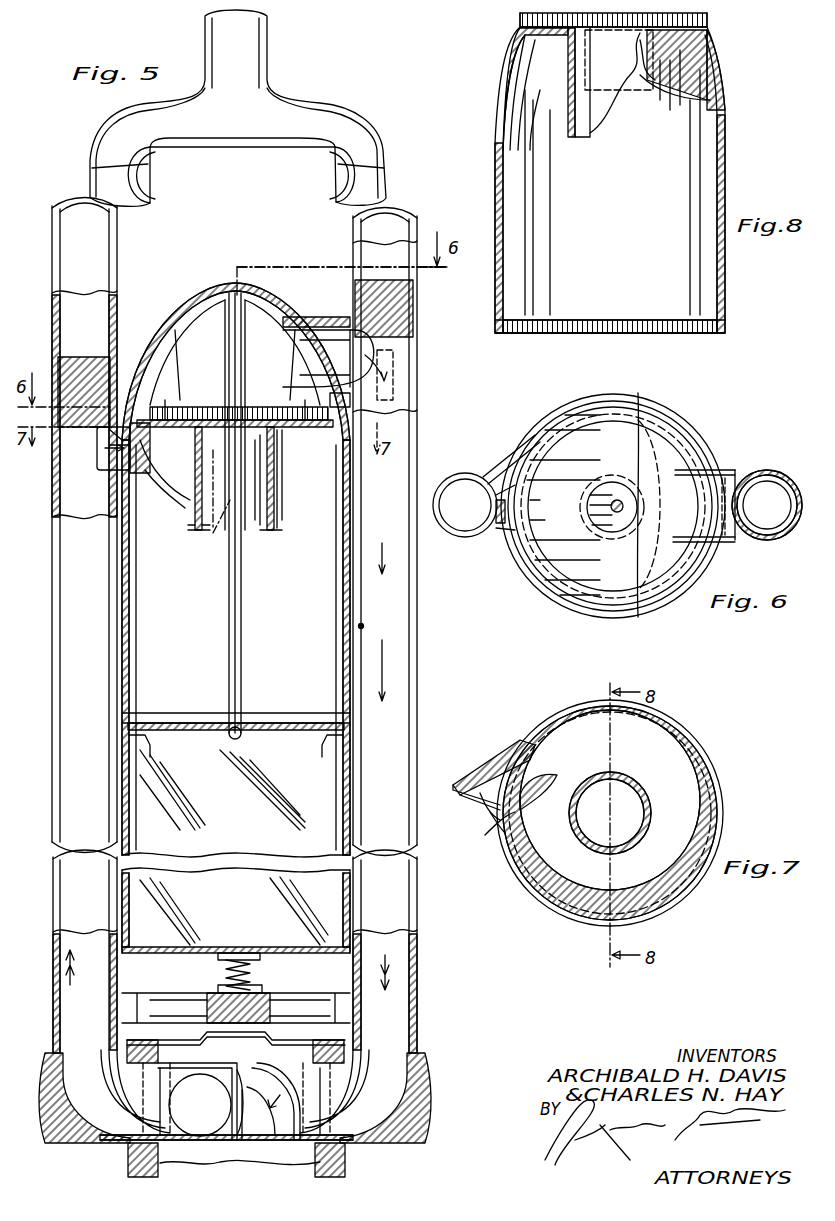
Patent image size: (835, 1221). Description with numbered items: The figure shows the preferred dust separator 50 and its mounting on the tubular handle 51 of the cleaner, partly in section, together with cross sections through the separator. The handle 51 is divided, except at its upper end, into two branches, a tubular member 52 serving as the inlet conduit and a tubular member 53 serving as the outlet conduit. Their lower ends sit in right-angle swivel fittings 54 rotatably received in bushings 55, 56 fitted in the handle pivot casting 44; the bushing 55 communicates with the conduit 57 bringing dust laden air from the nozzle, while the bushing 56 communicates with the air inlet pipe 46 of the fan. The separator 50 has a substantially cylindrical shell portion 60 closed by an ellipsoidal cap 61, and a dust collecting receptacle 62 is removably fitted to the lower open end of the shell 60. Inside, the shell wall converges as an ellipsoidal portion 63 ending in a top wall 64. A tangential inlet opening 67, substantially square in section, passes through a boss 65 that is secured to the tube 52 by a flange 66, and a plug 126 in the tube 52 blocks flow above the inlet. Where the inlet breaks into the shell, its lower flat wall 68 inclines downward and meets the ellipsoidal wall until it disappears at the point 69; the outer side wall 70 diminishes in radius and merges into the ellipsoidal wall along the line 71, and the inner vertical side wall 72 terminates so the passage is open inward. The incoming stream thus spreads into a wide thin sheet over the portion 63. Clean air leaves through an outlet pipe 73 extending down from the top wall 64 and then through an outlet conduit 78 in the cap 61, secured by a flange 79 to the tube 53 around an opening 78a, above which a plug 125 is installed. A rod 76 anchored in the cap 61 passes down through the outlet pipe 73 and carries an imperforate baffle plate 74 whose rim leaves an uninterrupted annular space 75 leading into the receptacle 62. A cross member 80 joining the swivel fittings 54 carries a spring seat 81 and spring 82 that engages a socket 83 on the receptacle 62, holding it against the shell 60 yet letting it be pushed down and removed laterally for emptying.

In FIG. 5, the handle pivot casting 44 is at (345, 1155).
In FIG. 5, the air inlet pipe 46 is at (240, 1148).
In FIG. 5, the dust separator 50 is at (363, 626).
In FIG. 6, the dust separator 50 is at (420, 625).
In FIG. 5, the handle 51 is at (245, 46).
In FIG. 5, the tubular member 52 is at (90, 178).
In FIG. 6, the tubular member 52 is at (445, 540).
In FIG. 5, the tubular member 53 is at (388, 178).
In FIG. 6, the tubular member 53 is at (788, 477).
In FIG. 5, the right-angle swivel fitting 54 is at (48, 1145).
In FIG. 5, the bushing 55 is at (150, 1065).
In FIG. 5, the bushing 56 is at (320, 1065).
In FIG. 5, the conduit 57 is at (215, 1110).
In FIG. 5, the shell portion 60 is at (128, 630).
In FIG. 8, the shell portion 60 is at (497, 227).
In FIG. 6, the shell portion 60 is at (603, 612).
In FIG. 7, the shell portion 60 is at (722, 797).
In FIG. 5, the cap 61 is at (188, 303).
In FIG. 6, the cap 61 is at (655, 410).
In FIG. 5, the dust collecting receptacle 62 is at (343, 765).
In FIG. 5, the ellipsoidal portion 63 is at (140, 505).
In FIG. 8, the ellipsoidal portion 63 is at (515, 90).
In FIG. 5, the top wall 64 is at (333, 420).
In FIG. 8, the top wall 64 is at (705, 52).
In FIG. 6, the top wall 64 is at (568, 578).
In FIG. 5, the boss 65 is at (136, 423).
In FIG. 6, the boss 65 is at (505, 440).
In FIG. 5, the flange 66 is at (130, 423).
In FIG. 6, the flange 66 is at (470, 475).
In FIG. 7, the flange 66 is at (460, 785).
In FIG. 5, the inlet opening 67 is at (110, 450).
In FIG. 8, the inlet opening 67 is at (640, 45).
In FIG. 7, the inlet opening 67 is at (490, 798).
In FIG. 5, the lower flat wall 68 is at (198, 475).
In FIG. 8, the lower flat wall 68 is at (665, 92).
In FIG. 7, the lower flat wall 68 is at (525, 768).
In FIG. 5, the point 69 is at (213, 535).
In FIG. 7, the point 69 is at (650, 722).
In FIG. 5, the outer side wall 70 is at (317, 450).
In FIG. 8, the outer side wall 70 is at (530, 60).
In FIG. 7, the outer side wall 70 is at (700, 815).
In FIG. 5, the line 71 is at (274, 498).
In FIG. 7, the inner vertical side wall 72 is at (495, 818).
In FIG. 5, the outlet pipe 73 is at (248, 528).
In FIG. 8, the outlet pipe 73 is at (582, 135).
In FIG. 6, the outlet pipe 73 is at (607, 485).
In FIG. 7, the outlet pipe 73 is at (645, 808).
In FIG. 5, the baffle plate 74 is at (175, 722).
In FIG. 5, the annular space 75 is at (150, 750).
In FIG. 5, the rod 76 is at (241, 621).
In FIG. 6, the rod 76 is at (612, 503).
In FIG. 5, the outlet conduit 78 is at (330, 330).
In FIG. 6, the outlet conduit 78 is at (725, 470).
In FIG. 5, the opening 78a is at (395, 345).
In FIG. 5, the flange 79 is at (350, 290).
In FIG. 6, the flange 79 is at (745, 540).
In FIG. 5, the cross member 80 is at (262, 1000).
In FIG. 5, the spring seat 81 is at (218, 988).
In FIG. 5, the spring 82 is at (243, 953).
In FIG. 5, the socket 83 is at (252, 962).
In FIG. 5, the plug 125 is at (405, 300).
In FIG. 5, the plug 126 is at (75, 350).